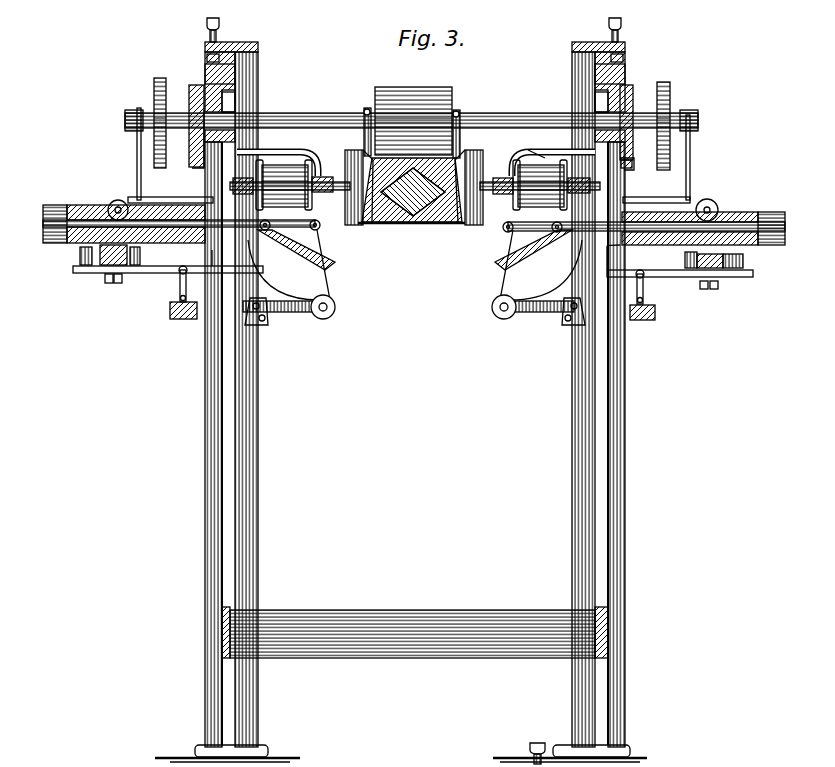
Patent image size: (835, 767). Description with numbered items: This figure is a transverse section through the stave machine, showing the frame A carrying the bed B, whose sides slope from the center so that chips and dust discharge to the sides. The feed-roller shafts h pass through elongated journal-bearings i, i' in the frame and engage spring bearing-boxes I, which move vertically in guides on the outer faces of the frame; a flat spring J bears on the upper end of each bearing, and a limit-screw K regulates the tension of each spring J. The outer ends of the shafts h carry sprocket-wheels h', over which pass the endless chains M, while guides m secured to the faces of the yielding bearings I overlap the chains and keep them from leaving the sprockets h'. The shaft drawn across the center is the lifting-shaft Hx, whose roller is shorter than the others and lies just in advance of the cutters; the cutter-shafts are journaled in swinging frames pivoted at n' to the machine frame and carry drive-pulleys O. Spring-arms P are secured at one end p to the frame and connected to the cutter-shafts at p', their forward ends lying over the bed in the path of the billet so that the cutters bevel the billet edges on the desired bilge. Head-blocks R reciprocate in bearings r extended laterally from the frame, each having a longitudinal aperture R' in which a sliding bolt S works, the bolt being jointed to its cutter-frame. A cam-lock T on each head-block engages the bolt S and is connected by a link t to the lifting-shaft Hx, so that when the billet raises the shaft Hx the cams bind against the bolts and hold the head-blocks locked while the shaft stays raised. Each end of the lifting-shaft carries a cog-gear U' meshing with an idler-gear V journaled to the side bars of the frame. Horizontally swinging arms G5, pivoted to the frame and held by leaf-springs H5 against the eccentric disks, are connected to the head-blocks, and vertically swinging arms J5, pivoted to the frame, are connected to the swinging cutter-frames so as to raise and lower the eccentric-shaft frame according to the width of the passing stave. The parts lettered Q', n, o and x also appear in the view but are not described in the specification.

The frame A is at (248, 412).
The bed B is at (386, 224).
The swinging arms G5 is at (734, 286).
The leaf-spring H5 is at (754, 260).
The lifting-shaft Hx is at (710, 123).
The spring bearing-boxes I is at (205, 72).
The flat spring J is at (206, 58).
The vertically-swinging arms J5 is at (643, 320).
The limit-screw K is at (220, 24).
The endless chains M is at (198, 168).
The drive-pulleys O is at (355, 150).
The spring-arms P is at (272, 152).
The wedge block Q' is at (413, 211).
The head-blocks R is at (410, 215).
The longitudinal aperture R' is at (410, 195).
The sliding bolts S is at (280, 240).
The cam-lock T is at (128, 200).
The cog-gear U' is at (409, 112).
The idler-gear V is at (413, 121).
The roller-shafts h is at (411, 108).
The sprocket-wheels h' is at (431, 132).
The elongated journal-bearings i is at (248, 99).
The elongated journal-bearing i' is at (579, 98).
The guides m is at (634, 92).
The end cap n is at (401, 226).
The pivot n' is at (408, 292).
The pin o is at (364, 110).
The spring-arm end p is at (546, 147).
The spring-arm connection p' is at (417, 208).
The bearings r is at (785, 228).
The links t is at (137, 142).
The shoulder x is at (111, 114).